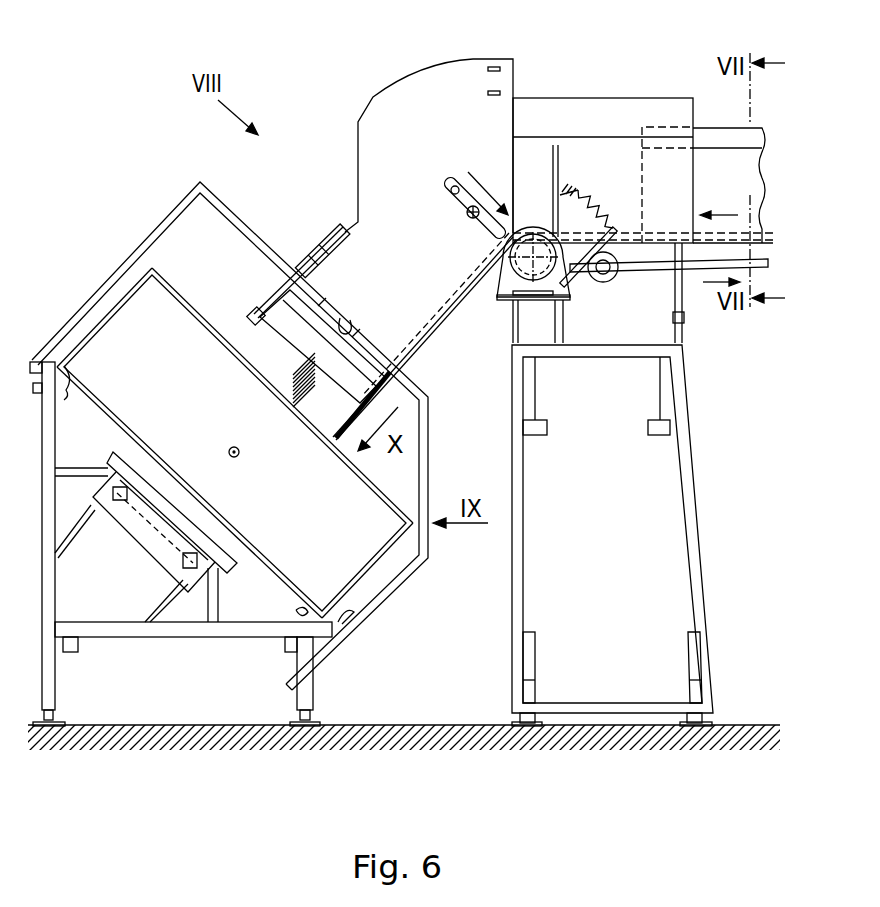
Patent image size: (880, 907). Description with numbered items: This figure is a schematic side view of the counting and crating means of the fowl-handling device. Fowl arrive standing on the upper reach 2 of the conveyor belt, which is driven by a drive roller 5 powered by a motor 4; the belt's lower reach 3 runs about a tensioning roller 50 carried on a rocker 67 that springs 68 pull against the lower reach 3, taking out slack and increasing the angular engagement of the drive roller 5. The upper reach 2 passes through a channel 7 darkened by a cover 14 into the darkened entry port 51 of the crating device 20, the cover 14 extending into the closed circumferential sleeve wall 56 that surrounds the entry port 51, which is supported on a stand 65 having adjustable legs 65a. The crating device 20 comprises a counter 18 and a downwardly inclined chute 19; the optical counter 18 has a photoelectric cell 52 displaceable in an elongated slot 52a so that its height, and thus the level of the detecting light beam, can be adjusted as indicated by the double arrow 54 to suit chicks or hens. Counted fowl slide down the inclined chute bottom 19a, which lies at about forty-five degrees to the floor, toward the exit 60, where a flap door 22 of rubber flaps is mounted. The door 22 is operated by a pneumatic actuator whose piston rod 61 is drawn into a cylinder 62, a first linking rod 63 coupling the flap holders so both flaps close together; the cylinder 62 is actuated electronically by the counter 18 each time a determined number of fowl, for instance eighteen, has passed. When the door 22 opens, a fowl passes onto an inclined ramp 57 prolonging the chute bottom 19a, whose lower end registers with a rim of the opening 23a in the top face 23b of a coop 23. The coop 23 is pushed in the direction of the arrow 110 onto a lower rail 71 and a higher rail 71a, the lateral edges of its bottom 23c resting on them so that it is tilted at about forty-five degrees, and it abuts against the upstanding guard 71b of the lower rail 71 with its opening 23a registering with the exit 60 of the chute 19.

The upper reach 2 is at (669, 235).
The lower reach 3 is at (752, 264).
The motor 4 is at (500, 290).
The drive roller 5 is at (525, 271).
The channel 7 is at (715, 160).
The cover 14 is at (753, 130).
The counter 18 is at (536, 66).
The chute 19 is at (418, 338).
The chute bottom 19a is at (422, 327).
The crating device 20 is at (335, 150).
The flap door 22 is at (280, 391).
The coop 23 is at (235, 443).
The opening 23a is at (294, 403).
The top face 23b is at (190, 298).
The bottom 23c is at (260, 536).
The tensioning roller 50 is at (606, 272).
The entry port 51 is at (594, 148).
The photoelectric cell 52 is at (472, 216).
The elongated slot 52a is at (451, 192).
The double arrow 54 is at (495, 198).
The sleeve wall 56 is at (666, 100).
The ramp 57 is at (348, 440).
The exit 60 is at (352, 328).
The piston rod 61 is at (285, 290).
The cylinder 62 is at (323, 247).
The first linking rod 63 is at (251, 308).
The stand 65 is at (702, 522).
The adjustable legs 65a is at (532, 692).
The rocker 67 is at (578, 282).
The springs 68 is at (600, 216).
The lower rail 71 is at (295, 611).
The upper rail 71a is at (72, 396).
The upstanding guard 71b is at (348, 620).
The arrow 110 is at (240, 457).